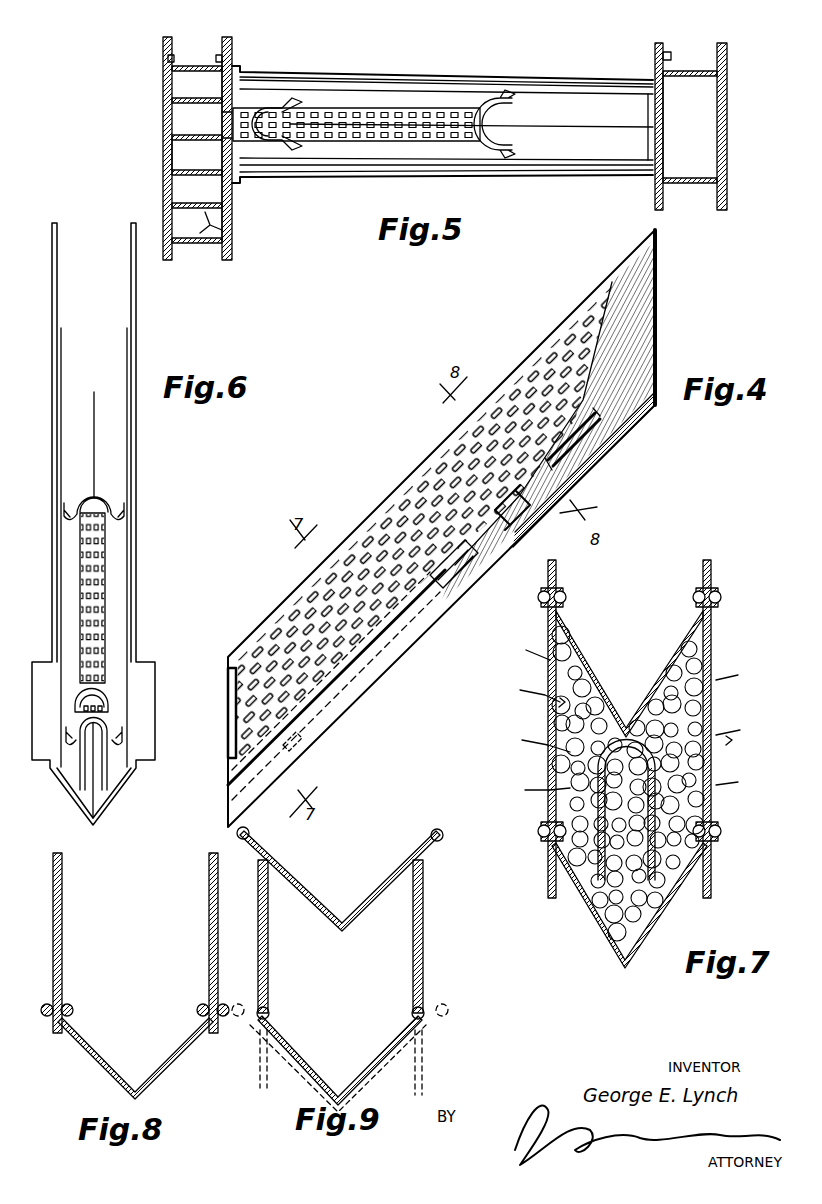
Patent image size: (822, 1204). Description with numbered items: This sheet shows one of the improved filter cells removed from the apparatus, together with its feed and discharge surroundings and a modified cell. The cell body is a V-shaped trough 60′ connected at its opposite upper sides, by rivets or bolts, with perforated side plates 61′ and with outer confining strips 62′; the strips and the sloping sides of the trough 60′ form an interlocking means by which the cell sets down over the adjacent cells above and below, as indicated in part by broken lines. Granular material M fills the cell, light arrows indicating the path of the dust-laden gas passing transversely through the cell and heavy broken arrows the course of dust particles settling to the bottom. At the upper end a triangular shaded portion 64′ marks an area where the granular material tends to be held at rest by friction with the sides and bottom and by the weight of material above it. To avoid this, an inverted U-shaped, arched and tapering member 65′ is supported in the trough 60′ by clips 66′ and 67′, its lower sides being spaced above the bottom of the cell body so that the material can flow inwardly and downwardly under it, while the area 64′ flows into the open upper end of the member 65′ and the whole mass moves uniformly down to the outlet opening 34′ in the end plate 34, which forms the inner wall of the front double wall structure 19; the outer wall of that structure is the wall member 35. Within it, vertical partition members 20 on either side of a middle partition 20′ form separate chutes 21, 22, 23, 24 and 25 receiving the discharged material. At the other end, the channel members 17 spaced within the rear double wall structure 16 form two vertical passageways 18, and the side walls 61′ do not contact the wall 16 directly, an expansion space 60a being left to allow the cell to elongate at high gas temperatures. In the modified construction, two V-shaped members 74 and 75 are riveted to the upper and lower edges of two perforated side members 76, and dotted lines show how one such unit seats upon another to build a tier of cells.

In FIG. 5, the double wall structure 16 is at (718, 48).
In FIG. 5, the channel members 17 is at (675, 176).
In FIG. 5, the vertical passageways 18 is at (705, 138).
In FIG. 5, the double wall structure 19 is at (222, 56).
In FIG. 5, the vertical partition members 20 is at (188, 173).
In FIG. 5, the middle partition 20′ is at (208, 220).
In FIG. 5, the chute 21 is at (215, 135).
In FIG. 5, the chute 22 is at (185, 87).
In FIG. 5, the chute 23 is at (185, 152).
In FIG. 5, the chute 24 is at (190, 188).
In FIG. 5, the chute 25 is at (190, 218).
In FIG. 5, the end plate 34 is at (233, 235).
In FIG. 5, the vertical outlet openings 34′ is at (228, 126).
In FIG. 5, the outer wall member 35 is at (163, 58).
In FIG. 5, the V-shaped trough 60′ is at (608, 160).
In FIG. 6, the V-shaped trough 60′ is at (118, 362).
In FIG. 4, the V-shaped trough 60′ is at (450, 593).
In FIG. 7, the V-shaped trough 60′ is at (665, 668).
In FIG. 8, the V-shaped trough 60′ is at (165, 1053).
In FIG. 5, the expansion space 60a is at (652, 152).
In FIG. 5, the perforated side plates 61′ is at (590, 88).
In FIG. 6, the perforated side plates 61′ is at (134, 280).
In FIG. 4, the perforated side plates 61′ is at (551, 348).
In FIG. 7, the perforated side plates 61′ is at (703, 562).
In FIG. 8, the perforated side plates 61′ is at (208, 870).
In FIG. 5, the outer confining strips 62′ is at (558, 82).
In FIG. 4, the outer confining strips 62′ is at (587, 435).
In FIG. 7, the outer confining strips 62′ is at (541, 603).
In FIG. 8, the outer confining strips 62′ is at (53, 1036).
In FIG. 4, the triangular shaded portion 64′ is at (623, 412).
In FIG. 5, the inverted U-shaped tapering member 65′ is at (372, 108).
In FIG. 6, the inverted U-shaped tapering member 65′ is at (106, 580).
In FIG. 4, the inverted U-shaped tapering member 65′ is at (467, 574).
In FIG. 7, the inverted U-shaped tapering member 65′ is at (627, 740).
In FIG. 5, the clip 66′ is at (498, 102).
In FIG. 6, the clip 66′ is at (100, 500).
In FIG. 4, the clip 66′ is at (522, 522).
In FIG. 5, the clip 67′ is at (278, 106).
In FIG. 6, the clip 67′ is at (108, 708).
In FIG. 4, the clip 67′ is at (300, 742).
In FIG. 9, the V-shaped member 74 is at (377, 893).
In FIG. 9, the V-shaped member 75 is at (375, 1062).
In FIG. 9, the perforated side members 76 is at (268, 930).
In FIG. 7, the granular material M is at (690, 742).